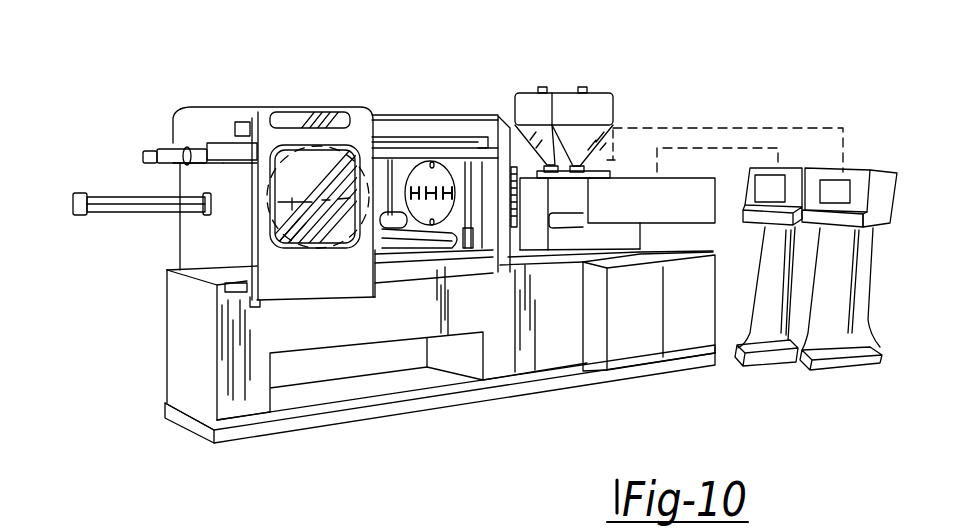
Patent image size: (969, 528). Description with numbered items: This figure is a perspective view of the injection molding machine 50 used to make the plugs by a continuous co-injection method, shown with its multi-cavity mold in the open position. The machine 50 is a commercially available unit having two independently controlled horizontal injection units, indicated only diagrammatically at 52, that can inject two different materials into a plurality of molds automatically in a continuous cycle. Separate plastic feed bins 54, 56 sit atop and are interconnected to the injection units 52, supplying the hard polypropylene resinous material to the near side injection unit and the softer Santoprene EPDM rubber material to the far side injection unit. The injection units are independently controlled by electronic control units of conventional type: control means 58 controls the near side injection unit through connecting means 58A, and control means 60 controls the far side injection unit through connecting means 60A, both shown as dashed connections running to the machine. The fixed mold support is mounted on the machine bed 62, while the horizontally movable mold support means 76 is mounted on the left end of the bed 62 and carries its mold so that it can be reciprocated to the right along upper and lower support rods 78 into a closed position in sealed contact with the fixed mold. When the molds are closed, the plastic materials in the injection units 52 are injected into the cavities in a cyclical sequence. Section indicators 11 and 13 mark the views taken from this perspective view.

The injection molding machine 50 is at (242, 105).
The horizontal injection units 52 is at (713, 196).
The plastic feed bin 54 is at (615, 105).
The plastic feed bin 56 is at (522, 93).
The control means 58 is at (797, 169).
The connecting means 58A is at (763, 148).
The control means 60 is at (873, 174).
The connecting means 60A is at (722, 128).
The machine bed 62 is at (414, 270).
The horizontally movable mold support means 76 is at (362, 294).
The upper and lower support rods 78 is at (153, 148).
The section line 11- 11 is at (353, 58).
The section line 13 is at (398, 178).